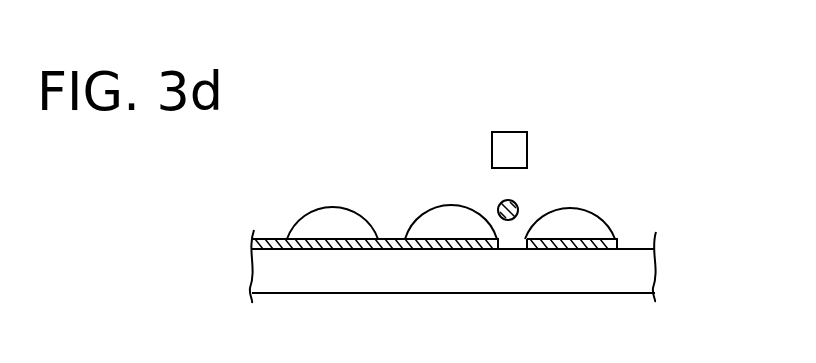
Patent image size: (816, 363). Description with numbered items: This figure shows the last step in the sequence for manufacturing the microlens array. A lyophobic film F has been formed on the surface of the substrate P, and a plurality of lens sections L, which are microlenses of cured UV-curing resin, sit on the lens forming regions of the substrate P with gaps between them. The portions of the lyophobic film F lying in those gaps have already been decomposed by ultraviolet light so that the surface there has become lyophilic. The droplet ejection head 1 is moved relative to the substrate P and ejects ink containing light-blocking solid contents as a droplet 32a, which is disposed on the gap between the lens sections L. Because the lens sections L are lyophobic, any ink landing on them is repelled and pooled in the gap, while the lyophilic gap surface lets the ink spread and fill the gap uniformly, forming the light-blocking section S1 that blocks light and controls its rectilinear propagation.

The droplet ejection head 1 is at (515, 132).
The droplet 32a is at (517, 203).
The lens section L is at (327, 206).
The lyophobic film F is at (338, 244).
The light-blocking section S1 is at (268, 238).
The substrate P is at (655, 273).